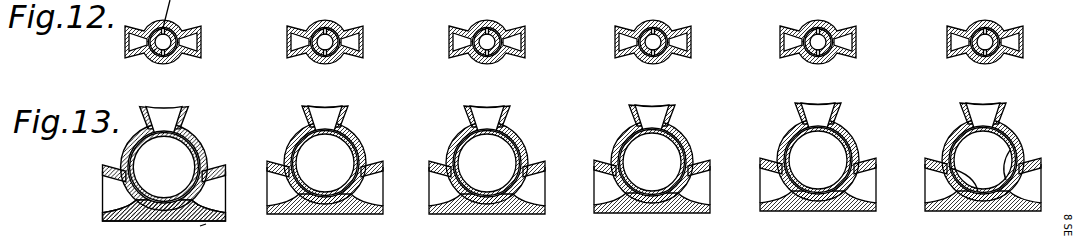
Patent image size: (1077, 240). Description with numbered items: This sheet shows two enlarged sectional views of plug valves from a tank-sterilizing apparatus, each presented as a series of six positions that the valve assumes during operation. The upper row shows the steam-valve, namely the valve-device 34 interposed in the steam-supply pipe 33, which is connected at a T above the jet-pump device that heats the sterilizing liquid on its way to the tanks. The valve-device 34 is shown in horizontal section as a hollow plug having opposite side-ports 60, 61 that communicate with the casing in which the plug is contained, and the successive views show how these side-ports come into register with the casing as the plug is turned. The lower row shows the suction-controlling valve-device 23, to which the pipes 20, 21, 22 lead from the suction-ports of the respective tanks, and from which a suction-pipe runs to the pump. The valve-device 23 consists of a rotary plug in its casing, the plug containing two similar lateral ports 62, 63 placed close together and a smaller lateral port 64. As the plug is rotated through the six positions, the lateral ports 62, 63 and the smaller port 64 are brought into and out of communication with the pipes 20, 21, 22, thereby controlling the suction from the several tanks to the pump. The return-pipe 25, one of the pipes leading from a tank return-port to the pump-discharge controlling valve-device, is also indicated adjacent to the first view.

In FIG. 13, the pipe 20 is at (480, 161).
In FIG. 13, the pipe 21 is at (163, 113).
In FIG. 13, the pipe 22 is at (118, 203).
In FIG. 13, the valve-device 23 is at (503, 217).
In FIG. 13, the pipe 25 is at (207, 232).
In FIG. 12, the steam-supply pipe 33 is at (128, 43).
In FIG. 12, the valve-device 34 is at (176, 43).
In FIG. 12, the side-port 60 is at (172, 58).
In FIG. 12, the side-port 61 is at (151, 60).
In FIG. 13, the lateral port 62 is at (195, 137).
In FIG. 13, the lateral port 63 is at (202, 166).
In FIG. 13, the smaller lateral port 64 is at (116, 179).